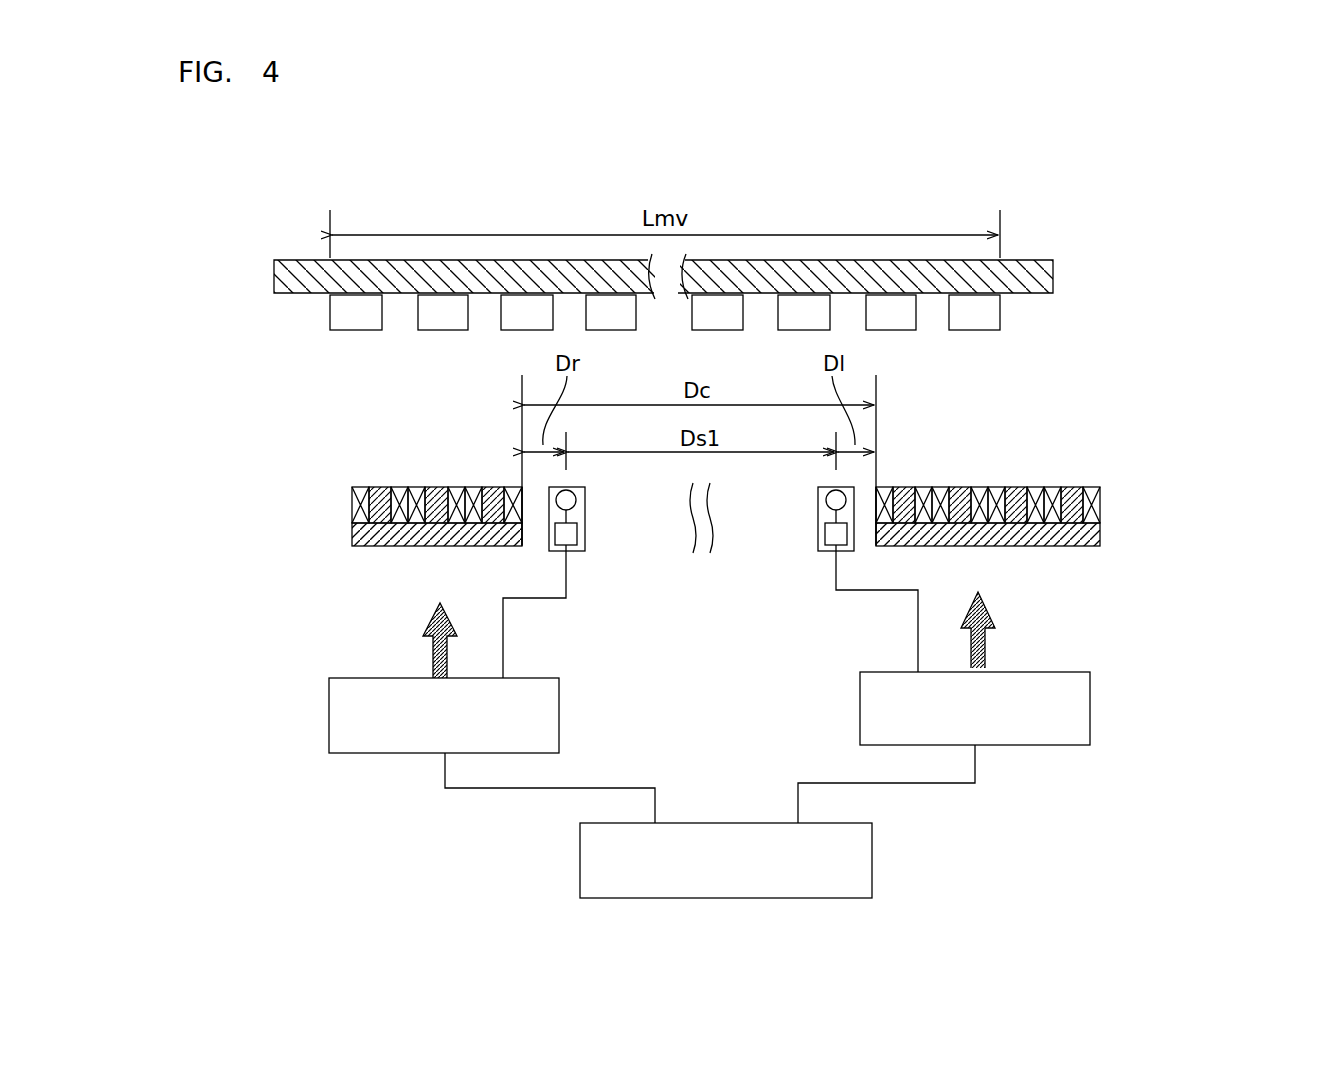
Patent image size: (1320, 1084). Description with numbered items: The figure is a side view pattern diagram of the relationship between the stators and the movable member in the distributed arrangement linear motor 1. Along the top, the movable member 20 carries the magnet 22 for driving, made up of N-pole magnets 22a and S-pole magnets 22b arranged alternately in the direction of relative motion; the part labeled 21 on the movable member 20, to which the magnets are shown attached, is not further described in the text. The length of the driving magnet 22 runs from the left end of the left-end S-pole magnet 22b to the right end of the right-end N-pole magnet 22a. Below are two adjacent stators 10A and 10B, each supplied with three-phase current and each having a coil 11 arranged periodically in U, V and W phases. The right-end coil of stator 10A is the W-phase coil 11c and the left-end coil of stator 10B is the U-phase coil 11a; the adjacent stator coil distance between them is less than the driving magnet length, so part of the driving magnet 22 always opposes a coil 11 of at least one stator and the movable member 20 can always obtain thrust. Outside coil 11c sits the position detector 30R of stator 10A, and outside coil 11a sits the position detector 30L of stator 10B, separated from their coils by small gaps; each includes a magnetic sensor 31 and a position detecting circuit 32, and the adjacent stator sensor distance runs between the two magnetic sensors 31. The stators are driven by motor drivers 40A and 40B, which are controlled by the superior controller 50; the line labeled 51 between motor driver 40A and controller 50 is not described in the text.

The distributed arrangement linear motor 1 is at (182, 230).
The movable member 20 is at (739, 271).
The yoke 21 is at (1053, 262).
The magnet for driving 22 is at (732, 337).
The N-pole magnet 22a is at (975, 330).
The S-pole magnet 22b is at (893, 330).
The stator 10A is at (723, 479).
The stator 10B is at (1063, 445).
The coil 11 is at (350, 505).
The W-phase coil 11c is at (510, 487).
The U-phase coil 11a is at (880, 487).
The position detector 30R is at (585, 551).
The position detector 30L is at (818, 551).
The magnetic sensor 31 is at (576, 500).
The position detecting circuit 32 is at (577, 533).
The motor driver 40A is at (560, 716).
The motor driver 40B is at (1090, 712).
The superior controller 50 is at (873, 855).
The signal line 51 is at (443, 780).